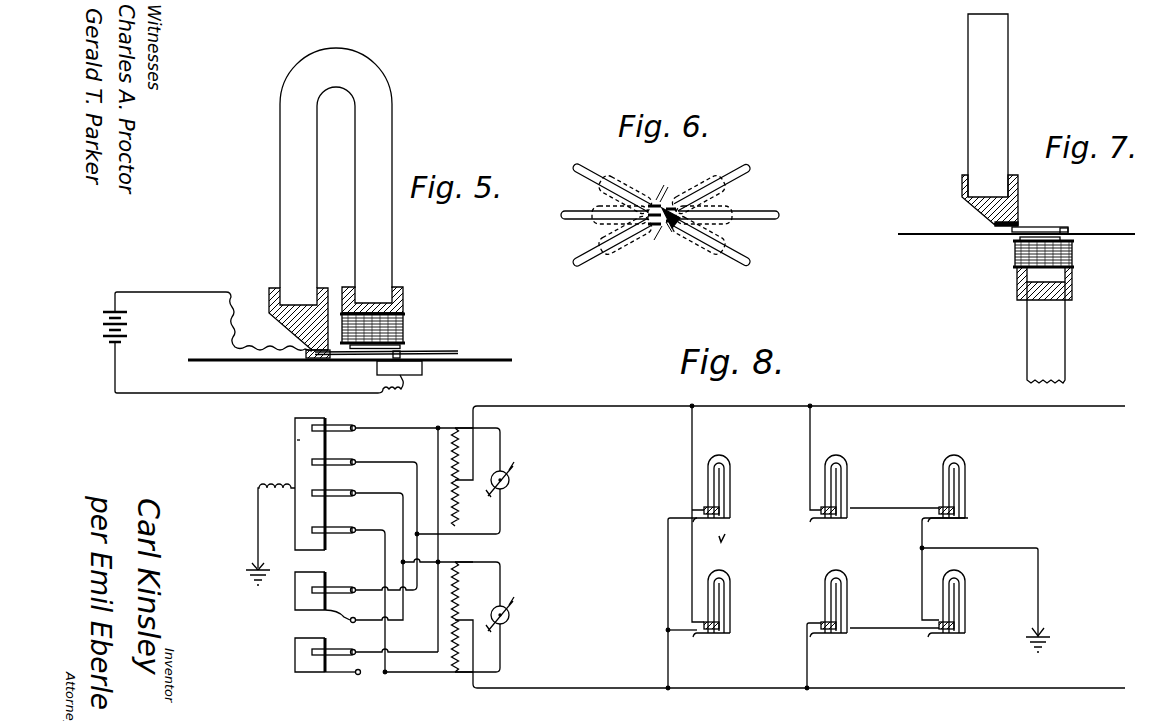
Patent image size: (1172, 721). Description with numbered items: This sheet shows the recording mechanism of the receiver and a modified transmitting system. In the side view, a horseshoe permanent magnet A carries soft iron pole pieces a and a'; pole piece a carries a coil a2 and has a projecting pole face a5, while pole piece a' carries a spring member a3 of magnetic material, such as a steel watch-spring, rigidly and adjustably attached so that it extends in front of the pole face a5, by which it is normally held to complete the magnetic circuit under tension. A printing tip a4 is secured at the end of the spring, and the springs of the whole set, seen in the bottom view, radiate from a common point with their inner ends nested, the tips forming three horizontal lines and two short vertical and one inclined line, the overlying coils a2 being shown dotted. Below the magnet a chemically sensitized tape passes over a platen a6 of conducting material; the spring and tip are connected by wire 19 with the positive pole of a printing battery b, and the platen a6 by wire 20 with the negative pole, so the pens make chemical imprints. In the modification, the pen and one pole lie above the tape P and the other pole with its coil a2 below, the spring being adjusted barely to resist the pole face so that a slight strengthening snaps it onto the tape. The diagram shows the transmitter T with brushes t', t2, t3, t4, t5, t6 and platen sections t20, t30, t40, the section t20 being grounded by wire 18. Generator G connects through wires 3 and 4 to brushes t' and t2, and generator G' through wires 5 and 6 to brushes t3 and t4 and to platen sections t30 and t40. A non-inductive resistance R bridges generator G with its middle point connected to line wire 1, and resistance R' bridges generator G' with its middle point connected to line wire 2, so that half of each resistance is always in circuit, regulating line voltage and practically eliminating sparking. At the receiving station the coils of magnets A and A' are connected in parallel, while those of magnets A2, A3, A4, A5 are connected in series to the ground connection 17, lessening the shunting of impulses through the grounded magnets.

In FIG. 5, the horseshoe permanent magnet A is at (349, 168).
In FIG. 7, the horseshoe permanent magnet A is at (1027, 198).
In FIG. 8, the horseshoe permanent magnet A is at (708, 585).
In FIG. 8, the receiving magnet A' is at (711, 547).
In FIG. 8, the receiving magnet A2 is at (873, 629).
In FIG. 8, the receiving magnet A3 is at (962, 603).
In FIG. 8, the receiving magnet A4 is at (874, 464).
In FIG. 8, the receiving magnet A5 is at (958, 537).
In FIG. 5, the pole piece a is at (384, 298).
In FIG. 5, the pole piece a' is at (291, 319).
In FIG. 7, the pole piece a' is at (1019, 237).
In FIG. 5, the coil a2 is at (403, 329).
In FIG. 6, the coil a2 is at (659, 218).
In FIG. 7, the coil a2 is at (1072, 256).
In FIG. 5, the spring member a3 is at (344, 358).
In FIG. 6, the spring member a3 is at (672, 219).
In FIG. 7, the spring member a3 is at (1050, 228).
In FIG. 5, the printing tip a4 is at (392, 350).
In FIG. 6, the printing tip a4 is at (693, 214).
In FIG. 7, the printing tip a4 is at (1068, 232).
In FIG. 5, the pole face a5 is at (400, 348).
In FIG. 7, the pole face a5 is at (1022, 240).
In FIG. 5, the platen a6 is at (422, 375).
In FIG. 5, the tape P is at (350, 350).
In FIG. 7, the tape P is at (1014, 235).
In FIG. 5, the printing battery b is at (107, 327).
In FIG. 5, the wire 19 is at (213, 312).
In FIG. 5, the wire 20 is at (259, 377).
In FIG. 8, the line wire 1 is at (799, 407).
In FIG. 8, the line wire 2 is at (799, 691).
In FIG. 8, the wire 3 is at (414, 531).
In FIG. 8, the wire 4 is at (405, 526).
In FIG. 8, the wire 5 is at (414, 556).
In FIG. 8, the wire 6 is at (414, 611).
In FIG. 8, the transmitter T is at (347, 475).
In FIG. 8, the brush t' is at (334, 419).
In FIG. 8, the brush t2 is at (334, 454).
In FIG. 8, the brush t3 is at (334, 485).
In FIG. 8, the brush t4 is at (334, 522).
In FIG. 8, the brush t5 is at (334, 582).
In FIG. 8, the brush t6 is at (334, 644).
In FIG. 8, the platen section t20 is at (309, 444).
In FIG. 8, the platen section t30 is at (325, 597).
In FIG. 8, the platen section t40 is at (328, 655).
In FIG. 8, the ground wire 18 is at (265, 534).
In FIG. 8, the ground connection 17 is at (994, 600).
In FIG. 8, the non-inductive resistance R is at (476, 481).
In FIG. 8, the non-inductive resistance R' is at (476, 617).
In FIG. 8, the generator G is at (512, 479).
In FIG. 8, the generator G' is at (514, 614).